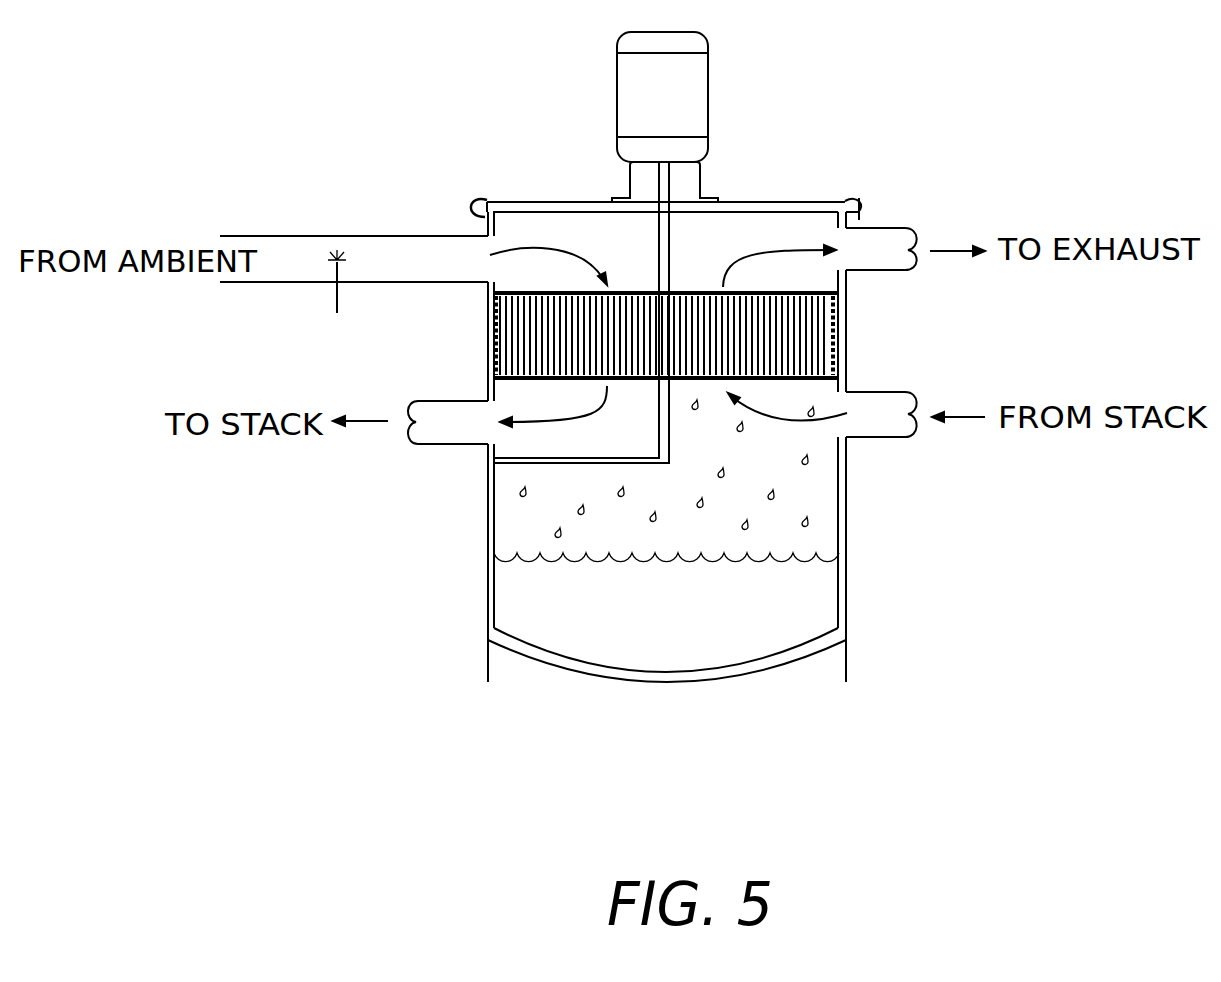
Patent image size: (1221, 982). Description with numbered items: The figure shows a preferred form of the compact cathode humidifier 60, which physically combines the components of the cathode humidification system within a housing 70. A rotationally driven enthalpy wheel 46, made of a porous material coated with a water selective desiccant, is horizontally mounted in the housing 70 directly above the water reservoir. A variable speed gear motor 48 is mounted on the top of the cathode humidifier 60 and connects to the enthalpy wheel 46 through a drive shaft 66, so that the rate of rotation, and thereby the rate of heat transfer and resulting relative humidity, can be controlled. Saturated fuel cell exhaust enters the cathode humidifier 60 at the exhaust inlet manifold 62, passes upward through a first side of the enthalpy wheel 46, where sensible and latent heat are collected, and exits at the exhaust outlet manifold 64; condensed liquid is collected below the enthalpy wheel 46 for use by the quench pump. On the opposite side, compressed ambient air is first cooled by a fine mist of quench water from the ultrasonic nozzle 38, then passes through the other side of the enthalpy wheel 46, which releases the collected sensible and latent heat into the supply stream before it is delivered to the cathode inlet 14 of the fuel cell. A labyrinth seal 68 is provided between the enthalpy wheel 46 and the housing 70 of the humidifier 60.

The variable speed electric motor 48 is at (618, 44).
The drive shaft 66 is at (668, 183).
The exhaust outlet manifold 64 is at (887, 238).
The ultrasonic nozzle 38 is at (320, 270).
The labyrinth seal 68 is at (494, 352).
The enthalpy wheel 46 is at (818, 344).
The cathode inlet 14 is at (442, 433).
The exhaust inlet manifold 62 is at (890, 423).
The housing 70 is at (847, 528).
The cathode humidifier 60 is at (820, 692).